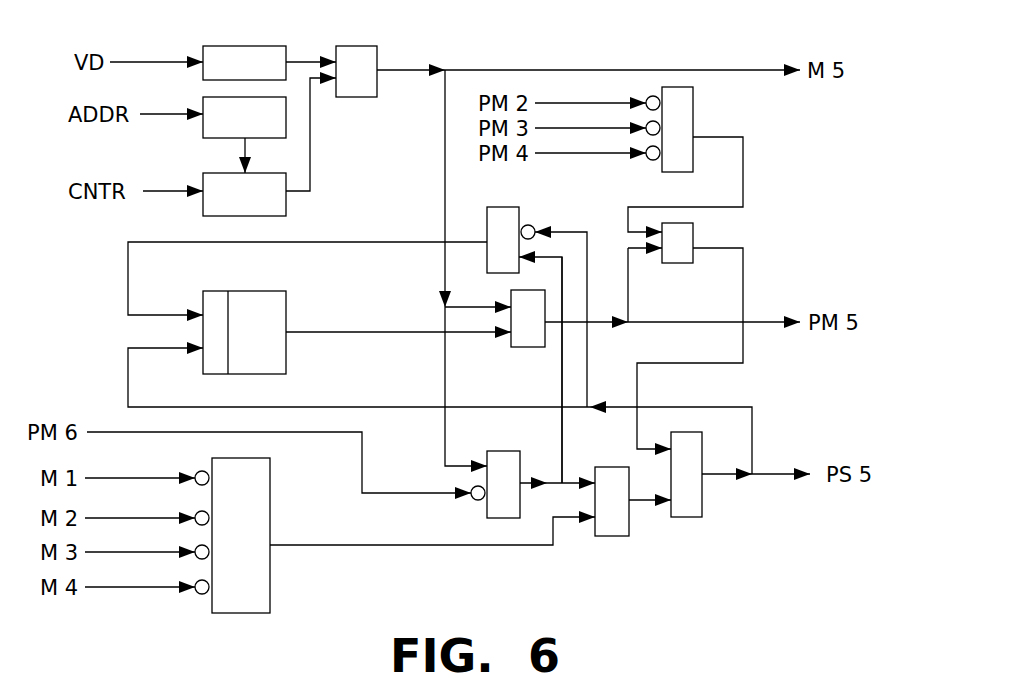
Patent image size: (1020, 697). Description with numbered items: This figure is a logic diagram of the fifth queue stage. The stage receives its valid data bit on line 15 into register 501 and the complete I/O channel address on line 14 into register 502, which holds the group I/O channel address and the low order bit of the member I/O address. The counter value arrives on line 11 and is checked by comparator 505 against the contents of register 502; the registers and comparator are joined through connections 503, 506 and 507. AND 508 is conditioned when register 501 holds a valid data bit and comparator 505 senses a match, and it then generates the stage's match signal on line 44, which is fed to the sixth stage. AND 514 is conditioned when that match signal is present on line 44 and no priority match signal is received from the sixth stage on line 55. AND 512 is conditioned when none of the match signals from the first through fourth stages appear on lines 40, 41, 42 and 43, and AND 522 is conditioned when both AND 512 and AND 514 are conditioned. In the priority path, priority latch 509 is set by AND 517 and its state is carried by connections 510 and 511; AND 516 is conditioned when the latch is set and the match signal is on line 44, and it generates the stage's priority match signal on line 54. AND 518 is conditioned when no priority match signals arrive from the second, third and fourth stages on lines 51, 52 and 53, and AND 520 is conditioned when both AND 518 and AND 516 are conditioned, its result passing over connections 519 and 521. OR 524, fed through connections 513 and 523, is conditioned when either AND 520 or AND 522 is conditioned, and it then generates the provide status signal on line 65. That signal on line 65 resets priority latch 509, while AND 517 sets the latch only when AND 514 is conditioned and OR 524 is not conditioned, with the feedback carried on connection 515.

The line 15 is at (178, 60).
The register 501 is at (210, 57).
The line 14 is at (182, 115).
The register 502 is at (222, 110).
The register output line 503 is at (240, 157).
The line 11 is at (177, 187).
The comparator 505 is at (253, 208).
The comparator output line 506 is at (310, 157).
The register output line 507 is at (305, 58).
The AND 508 is at (358, 53).
The line 44 is at (742, 70).
The line 51 is at (587, 102).
The line 52 is at (593, 128).
The line 53 is at (612, 157).
The AND 518 is at (686, 110).
The AND gate output line 519 is at (745, 167).
The AND 520 is at (693, 237).
The AND gate output line 521 is at (745, 288).
The AND 517 is at (495, 217).
The set line 510 is at (232, 242).
The priority latch 509 is at (262, 313).
The latch output line 511 is at (400, 333).
The AND 516 is at (527, 338).
The line 54 is at (760, 325).
The line 55 is at (120, 432).
The feedback line 515 is at (562, 438).
The line 40 is at (163, 475).
The line 41 is at (156, 517).
The line 42 is at (163, 552).
The line 43 is at (163, 587).
The AND 512 is at (245, 492).
The AND gate output line 513 is at (385, 548).
The AND 514 is at (502, 497).
The AND 522 is at (622, 517).
The AND gate 523 is at (640, 500).
The OR 524 is at (695, 490).
The line 65 is at (769, 473).